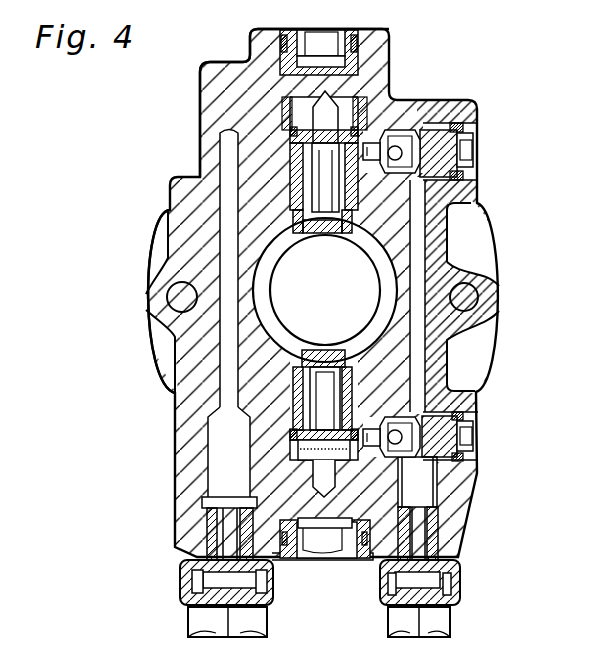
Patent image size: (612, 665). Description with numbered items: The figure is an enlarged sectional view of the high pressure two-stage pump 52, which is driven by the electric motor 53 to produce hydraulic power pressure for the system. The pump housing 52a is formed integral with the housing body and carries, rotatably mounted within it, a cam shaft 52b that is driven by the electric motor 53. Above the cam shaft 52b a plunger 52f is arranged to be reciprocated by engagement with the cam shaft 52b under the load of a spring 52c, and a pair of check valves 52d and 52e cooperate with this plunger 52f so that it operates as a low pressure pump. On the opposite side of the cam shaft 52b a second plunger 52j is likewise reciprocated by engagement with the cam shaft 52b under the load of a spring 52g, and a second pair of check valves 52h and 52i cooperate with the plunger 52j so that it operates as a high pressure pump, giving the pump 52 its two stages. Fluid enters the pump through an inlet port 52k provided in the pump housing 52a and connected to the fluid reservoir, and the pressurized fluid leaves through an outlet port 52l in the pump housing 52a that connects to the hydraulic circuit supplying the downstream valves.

The high pressure two-stage pump 52 is at (450, 233).
The pump housing 52a is at (200, 87).
The cam shaft 52b is at (343, 287).
The spring 52c is at (313, 157).
The check valve 52d is at (324, 129).
The check valve 52e is at (384, 128).
The plunger 52f is at (304, 226).
The spring 52g is at (294, 436).
The check valve 52h is at (289, 483).
The check valve 52i is at (420, 465).
The plunger 52j is at (296, 360).
The inlet port 52k is at (191, 582).
The outlet port 52l is at (458, 582).
The electric motor 53 is at (148, 357).